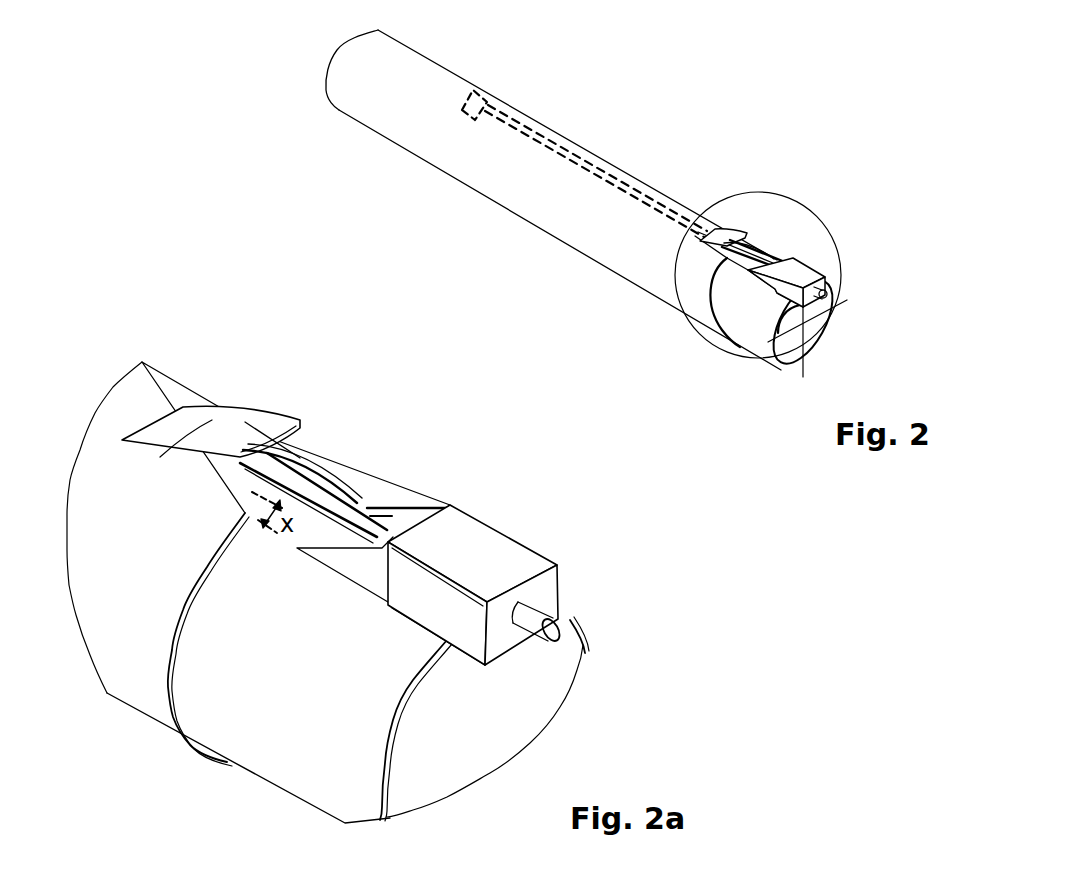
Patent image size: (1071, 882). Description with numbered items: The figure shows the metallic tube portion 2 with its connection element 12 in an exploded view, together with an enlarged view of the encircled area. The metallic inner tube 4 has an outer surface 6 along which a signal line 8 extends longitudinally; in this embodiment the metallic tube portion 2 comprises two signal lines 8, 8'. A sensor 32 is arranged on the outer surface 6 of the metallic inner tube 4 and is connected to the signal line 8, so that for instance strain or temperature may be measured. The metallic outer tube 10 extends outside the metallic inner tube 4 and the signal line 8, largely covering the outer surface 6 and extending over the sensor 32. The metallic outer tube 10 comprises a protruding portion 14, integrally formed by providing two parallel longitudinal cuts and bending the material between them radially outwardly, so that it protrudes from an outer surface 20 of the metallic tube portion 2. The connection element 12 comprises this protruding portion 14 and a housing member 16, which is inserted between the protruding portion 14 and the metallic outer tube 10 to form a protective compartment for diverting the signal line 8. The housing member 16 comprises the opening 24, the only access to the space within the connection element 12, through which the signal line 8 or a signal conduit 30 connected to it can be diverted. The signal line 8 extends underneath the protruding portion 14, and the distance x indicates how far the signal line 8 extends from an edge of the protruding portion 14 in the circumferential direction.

In FIG. 2, the metallic tube portion 2 is at (654, 124).
In FIG. 2, the metallic inner tube 4 is at (747, 312).
In FIG. 2a, the metallic inner tube 4 is at (337, 760).
In FIG. 2, the outer surface 6 is at (719, 288).
In FIG. 2a, the outer surface 6 is at (268, 715).
In FIG. 2, the signal line 8 is at (596, 200).
In FIG. 2a, the signal line 8 is at (335, 480).
In FIG. 2a, the signal line 8' is at (236, 502).
In FIG. 2, the metallic outer tube 10 is at (472, 160).
In FIG. 2a, the metallic outer tube 10 is at (132, 648).
In FIG. 2, the connection element 12 is at (785, 211).
In FIG. 2a, the protruding portion 14 is at (245, 427).
In FIG. 2a, the housing member 16 is at (512, 553).
In FIG. 2a, the outer surface 20 is at (129, 393).
In FIG. 2a, the opening 24 is at (562, 623).
In FIG. 2a, the signal conduit 30 is at (347, 505).
In FIG. 2, the sensor 32 is at (480, 92).